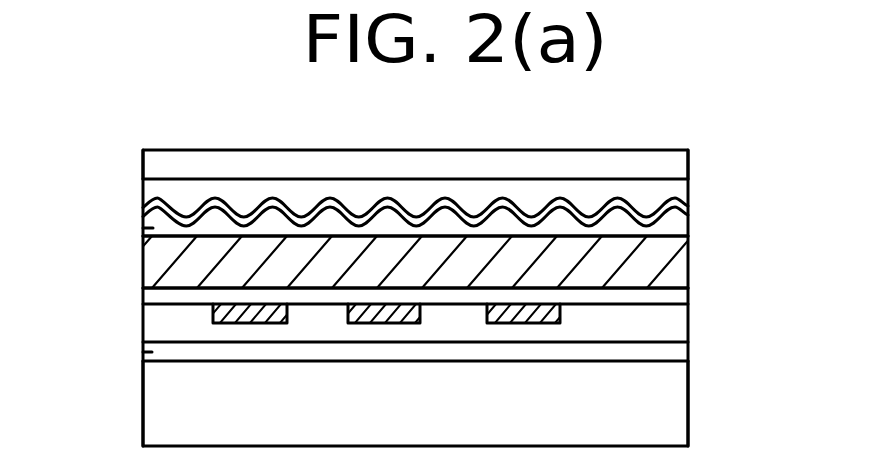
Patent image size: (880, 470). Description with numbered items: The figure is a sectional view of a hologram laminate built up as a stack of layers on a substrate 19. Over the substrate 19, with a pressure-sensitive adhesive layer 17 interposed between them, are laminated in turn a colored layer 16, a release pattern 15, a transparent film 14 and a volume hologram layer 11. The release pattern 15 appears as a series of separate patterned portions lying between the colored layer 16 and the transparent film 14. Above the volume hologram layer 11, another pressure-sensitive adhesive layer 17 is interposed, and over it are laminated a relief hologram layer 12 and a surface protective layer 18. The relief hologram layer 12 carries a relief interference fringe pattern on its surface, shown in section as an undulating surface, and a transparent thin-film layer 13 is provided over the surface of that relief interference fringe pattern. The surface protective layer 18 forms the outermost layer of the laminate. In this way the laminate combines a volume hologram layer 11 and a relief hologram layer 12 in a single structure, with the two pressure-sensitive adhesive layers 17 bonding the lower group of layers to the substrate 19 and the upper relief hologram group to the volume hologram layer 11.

The volume hologram layer 11 is at (688, 258).
The relief hologram layer 12 is at (688, 190).
The transparent thin-film layer 13 is at (688, 212).
The transparent film 14 is at (680, 296).
The release pattern 15 is at (560, 312).
The colored layer 16 is at (680, 331).
The pressure-sensitive adhesive layer 17 is at (153, 228).
The surface protective layer 18 is at (688, 163).
The substrate 19 is at (685, 410).